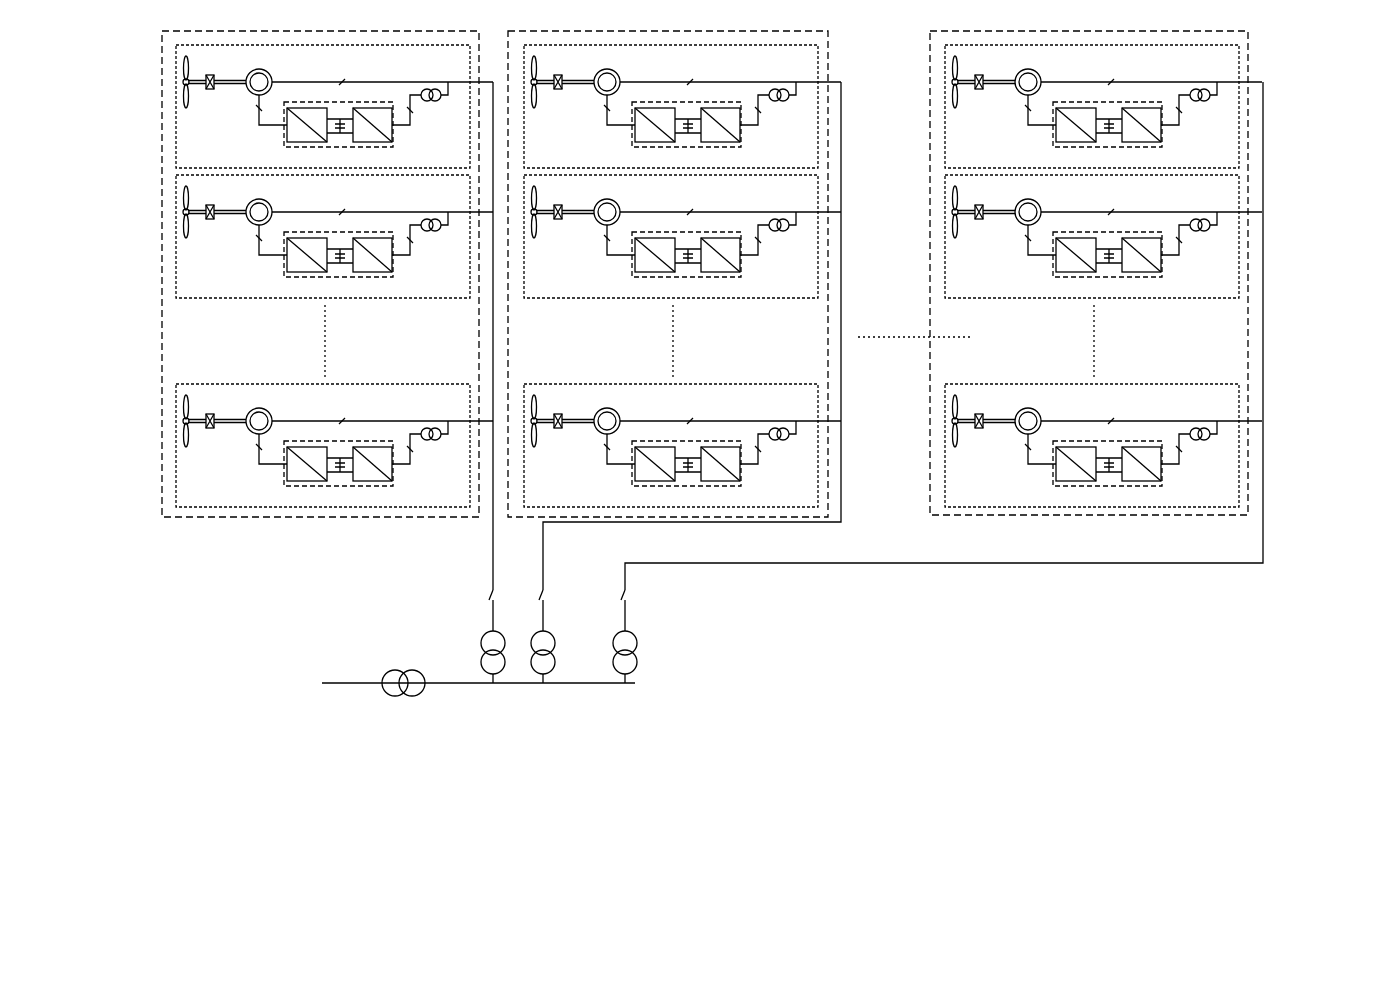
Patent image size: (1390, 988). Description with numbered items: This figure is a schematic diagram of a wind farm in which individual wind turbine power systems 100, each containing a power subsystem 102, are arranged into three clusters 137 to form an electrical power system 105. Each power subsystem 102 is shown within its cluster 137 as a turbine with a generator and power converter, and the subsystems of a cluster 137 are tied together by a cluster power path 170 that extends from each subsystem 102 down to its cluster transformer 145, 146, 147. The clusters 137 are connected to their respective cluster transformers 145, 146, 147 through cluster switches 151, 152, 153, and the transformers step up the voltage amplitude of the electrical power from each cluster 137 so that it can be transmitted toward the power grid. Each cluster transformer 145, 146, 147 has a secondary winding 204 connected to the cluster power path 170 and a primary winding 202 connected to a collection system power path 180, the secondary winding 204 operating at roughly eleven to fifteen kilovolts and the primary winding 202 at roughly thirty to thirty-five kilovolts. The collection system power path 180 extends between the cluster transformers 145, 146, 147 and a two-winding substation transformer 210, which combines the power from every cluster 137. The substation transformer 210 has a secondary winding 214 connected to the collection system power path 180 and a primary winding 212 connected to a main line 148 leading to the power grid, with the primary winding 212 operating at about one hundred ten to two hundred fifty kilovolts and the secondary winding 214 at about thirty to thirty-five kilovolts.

The electrical power system 105 is at (1298, 120).
The cluster 137 is at (162, 190).
The power subsystem 102 is at (176, 124).
The wind turbine power system 100 is at (718, 383).
The cluster power path 170 is at (486, 522).
The cluster switch 151 is at (484, 590).
The cluster switch 152 is at (535, 590).
The cluster switch 153 is at (612, 598).
The cluster transformer 145 is at (481, 644).
The cluster transformer 146 is at (546, 632).
The cluster transformer 147 is at (696, 671).
The secondary winding 204 is at (640, 645).
The primary winding 202 is at (641, 663).
The collection system power path 180 is at (472, 690).
The main line 148 is at (360, 686).
The substation transformer 210 is at (405, 680).
The primary winding 212 is at (395, 699).
The secondary winding 214 is at (413, 699).